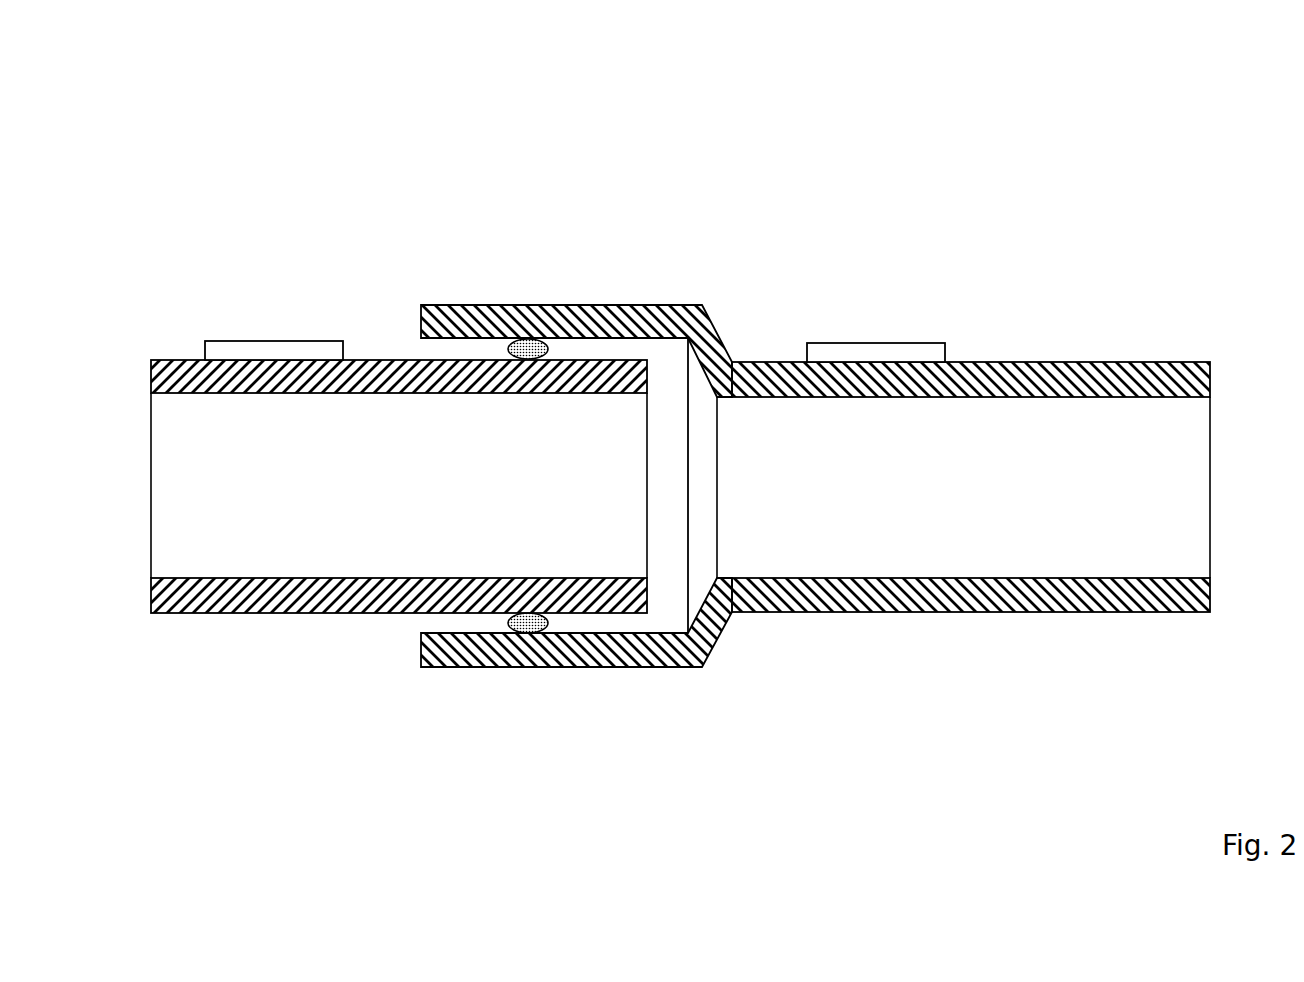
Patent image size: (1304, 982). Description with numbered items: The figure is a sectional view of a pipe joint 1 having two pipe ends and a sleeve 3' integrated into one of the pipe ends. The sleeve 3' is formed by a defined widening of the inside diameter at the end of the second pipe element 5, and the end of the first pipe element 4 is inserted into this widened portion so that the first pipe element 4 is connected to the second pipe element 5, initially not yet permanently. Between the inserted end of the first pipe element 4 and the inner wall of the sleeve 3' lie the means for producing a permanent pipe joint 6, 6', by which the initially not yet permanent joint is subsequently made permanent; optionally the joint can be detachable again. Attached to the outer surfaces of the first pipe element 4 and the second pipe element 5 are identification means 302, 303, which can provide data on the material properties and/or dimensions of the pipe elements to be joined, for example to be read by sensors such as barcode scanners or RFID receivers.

The pipe joint 1 is at (68, 159).
The sleeve 3' is at (576, 530).
The first pipe element 4 is at (250, 598).
The second pipe element 5 is at (1015, 612).
The means for producing a permanent pipe joint 6 is at (549, 684).
The means for producing a permanent pipe joint 6' is at (548, 292).
The identification means 302 is at (290, 350).
The identification means 303 is at (897, 350).